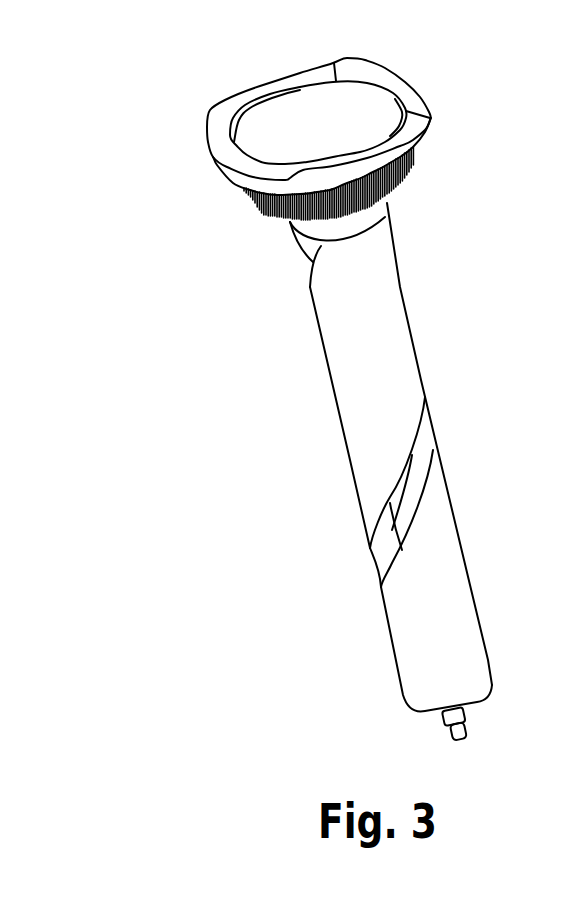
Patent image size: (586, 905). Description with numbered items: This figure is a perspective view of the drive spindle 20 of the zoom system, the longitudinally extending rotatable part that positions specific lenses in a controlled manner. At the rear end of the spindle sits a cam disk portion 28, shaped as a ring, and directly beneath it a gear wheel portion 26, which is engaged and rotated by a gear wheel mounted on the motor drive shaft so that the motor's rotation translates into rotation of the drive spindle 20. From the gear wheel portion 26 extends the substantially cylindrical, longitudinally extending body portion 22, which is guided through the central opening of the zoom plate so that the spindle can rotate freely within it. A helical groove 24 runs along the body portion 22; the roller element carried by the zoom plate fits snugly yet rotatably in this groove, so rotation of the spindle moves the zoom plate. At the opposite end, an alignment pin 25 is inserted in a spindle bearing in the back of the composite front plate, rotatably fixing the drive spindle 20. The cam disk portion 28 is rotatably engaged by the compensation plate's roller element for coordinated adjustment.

The drive spindle 20 is at (196, 553).
The body portion 22 is at (359, 366).
The helical groove 24 is at (385, 535).
The alignment pin 25 is at (479, 745).
The gear wheel portion 26 is at (413, 204).
The cam disk portion 28 is at (208, 93).